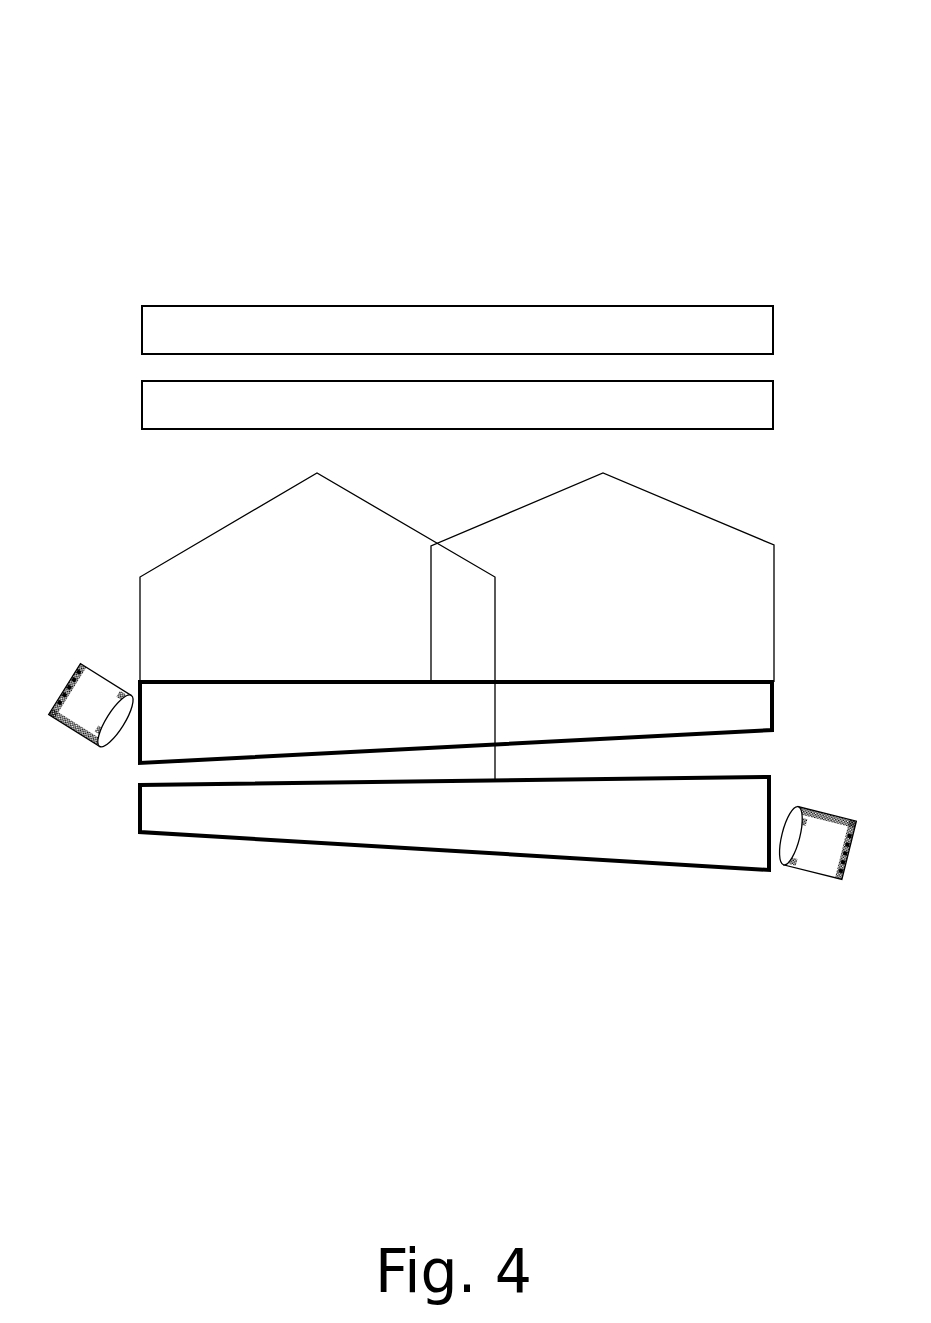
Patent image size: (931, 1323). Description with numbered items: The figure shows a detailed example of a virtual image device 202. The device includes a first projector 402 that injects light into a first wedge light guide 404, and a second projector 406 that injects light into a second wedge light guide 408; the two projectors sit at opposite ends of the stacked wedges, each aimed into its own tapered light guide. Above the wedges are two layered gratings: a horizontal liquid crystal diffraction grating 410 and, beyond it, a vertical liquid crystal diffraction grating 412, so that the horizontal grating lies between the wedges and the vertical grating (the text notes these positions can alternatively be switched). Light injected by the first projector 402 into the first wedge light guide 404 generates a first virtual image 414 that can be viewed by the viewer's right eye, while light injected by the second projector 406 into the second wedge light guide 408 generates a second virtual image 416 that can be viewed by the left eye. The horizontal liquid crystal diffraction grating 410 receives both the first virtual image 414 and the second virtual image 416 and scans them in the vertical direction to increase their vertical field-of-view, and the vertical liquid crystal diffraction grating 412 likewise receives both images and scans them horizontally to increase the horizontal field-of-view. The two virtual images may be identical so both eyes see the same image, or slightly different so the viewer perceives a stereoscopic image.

The virtual image device 202 is at (130, 52).
The first projector 402 is at (800, 807).
The first wedge light guide 404 is at (140, 806).
The second projector 406 is at (112, 685).
The second wedge light guide 408 is at (772, 706).
The horizontal liquid crystal diffraction grating 410 is at (773, 404).
The vertical liquid crystal diffraction grating 412 is at (773, 328).
The first virtual image 414 is at (365, 502).
The second virtual image 416 is at (673, 500).